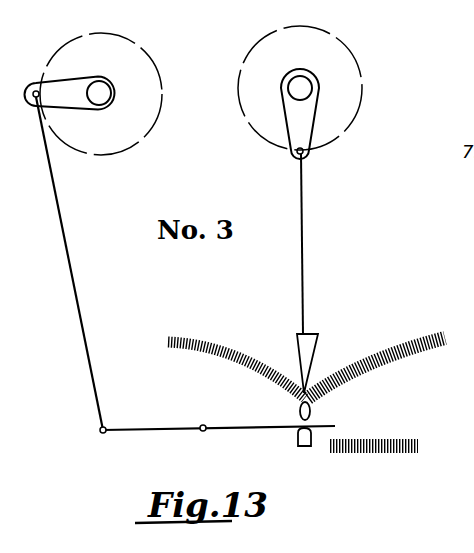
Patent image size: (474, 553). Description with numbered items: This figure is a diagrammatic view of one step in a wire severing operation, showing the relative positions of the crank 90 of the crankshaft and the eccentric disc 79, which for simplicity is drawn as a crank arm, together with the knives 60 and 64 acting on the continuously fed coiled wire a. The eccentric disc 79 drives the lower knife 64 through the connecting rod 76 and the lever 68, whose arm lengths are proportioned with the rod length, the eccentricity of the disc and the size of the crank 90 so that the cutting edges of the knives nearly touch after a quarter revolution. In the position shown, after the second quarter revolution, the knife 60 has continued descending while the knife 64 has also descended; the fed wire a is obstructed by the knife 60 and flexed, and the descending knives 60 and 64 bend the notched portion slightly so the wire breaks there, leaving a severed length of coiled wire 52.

The crank 90 is at (48, 88).
The eccentric disc 79 is at (112, 90).
The connecting rod 76 is at (70, 263).
The lever 68 is at (245, 432).
The knife 60 is at (305, 356).
The knife 64 is at (312, 411).
The coiled wire a is at (166, 343).
The severed length of coiled wire 52 is at (420, 446).